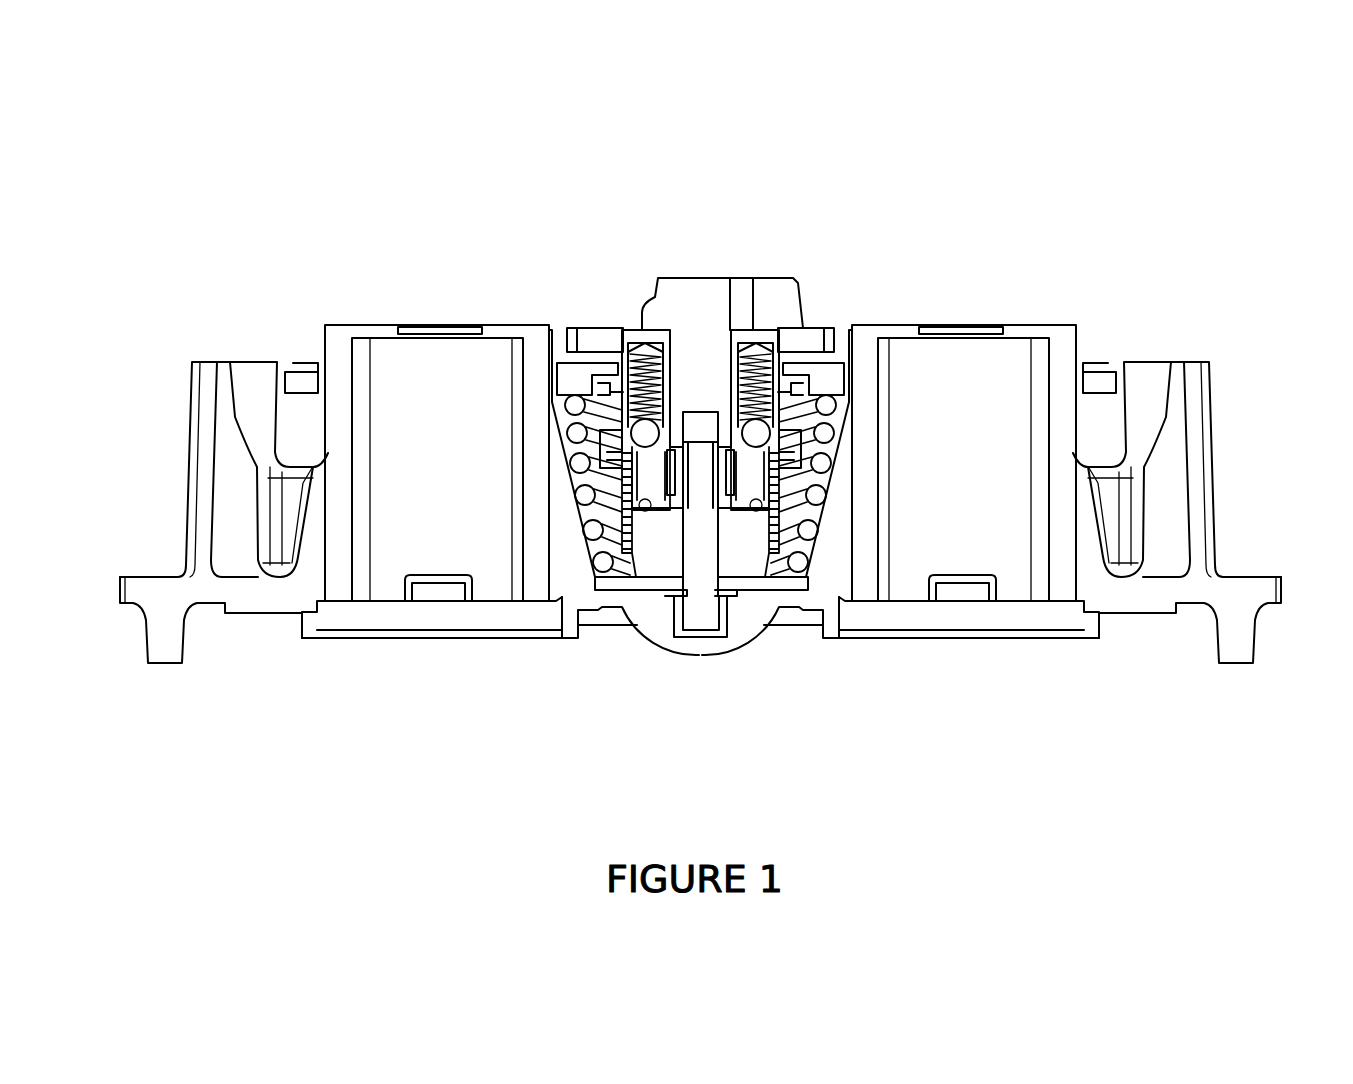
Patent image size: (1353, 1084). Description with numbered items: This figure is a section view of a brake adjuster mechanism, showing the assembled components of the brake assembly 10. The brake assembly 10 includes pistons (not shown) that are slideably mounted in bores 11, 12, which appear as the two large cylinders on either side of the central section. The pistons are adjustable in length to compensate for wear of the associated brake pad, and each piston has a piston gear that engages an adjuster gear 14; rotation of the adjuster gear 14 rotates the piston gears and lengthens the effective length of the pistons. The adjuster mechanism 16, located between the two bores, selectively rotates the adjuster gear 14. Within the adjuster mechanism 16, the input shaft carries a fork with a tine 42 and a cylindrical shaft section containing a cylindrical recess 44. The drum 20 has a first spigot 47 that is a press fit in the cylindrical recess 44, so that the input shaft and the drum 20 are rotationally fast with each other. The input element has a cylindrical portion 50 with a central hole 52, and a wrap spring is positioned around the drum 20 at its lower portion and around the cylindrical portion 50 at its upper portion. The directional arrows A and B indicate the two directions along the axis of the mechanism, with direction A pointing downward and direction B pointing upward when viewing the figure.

The brake assembly 10 is at (1065, 190).
The bore 11 is at (355, 360).
The bore 12 is at (1043, 358).
The adjuster gear 14 is at (835, 332).
The adjuster mechanism 16 is at (578, 208).
The drum 20 is at (745, 552).
The tine 42 is at (777, 278).
The cylindrical recess 44 is at (716, 425).
The first spigot 47 is at (700, 479).
The cylindrical portion 50 is at (755, 478).
The central hole 52 is at (690, 476).
The direction A is at (427, 667).
The direction B is at (284, 672).